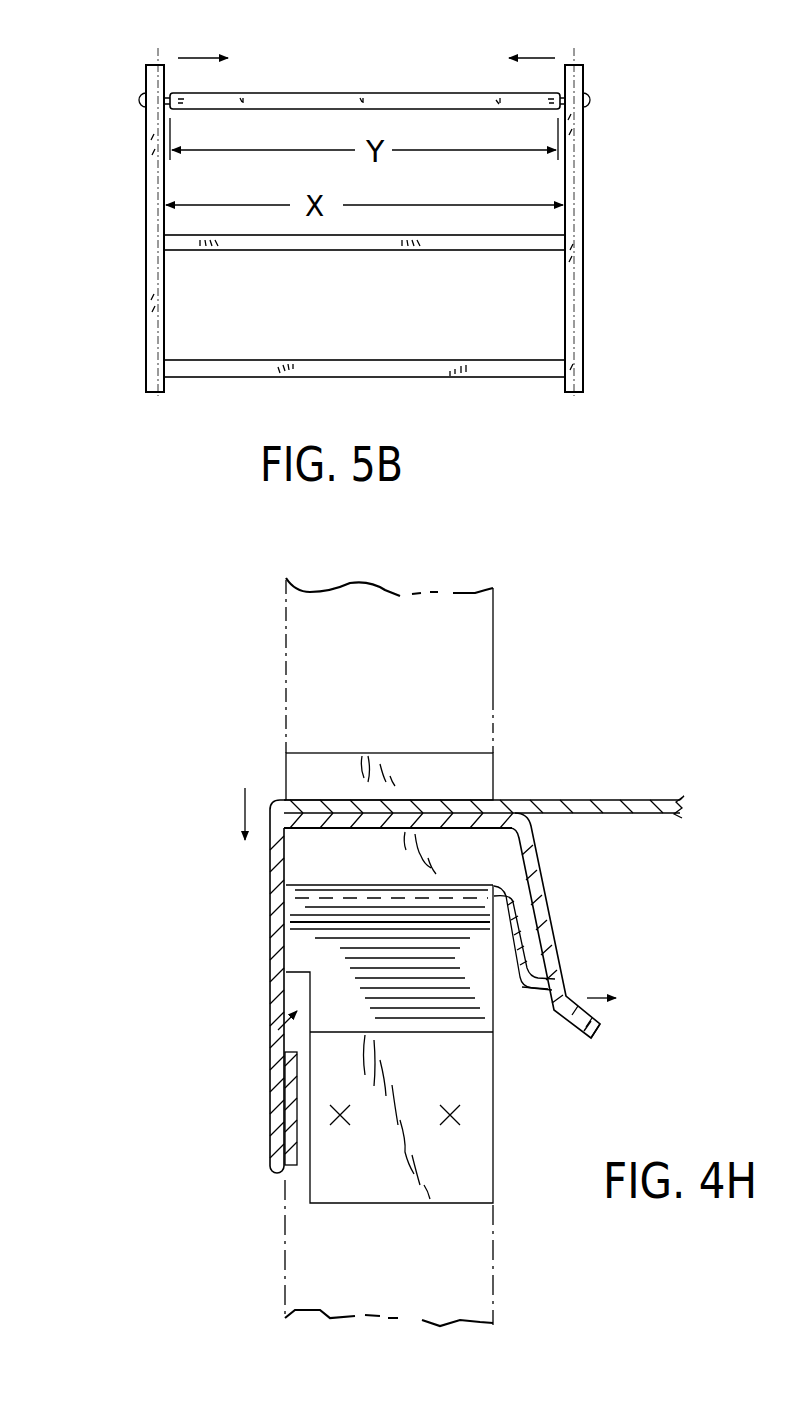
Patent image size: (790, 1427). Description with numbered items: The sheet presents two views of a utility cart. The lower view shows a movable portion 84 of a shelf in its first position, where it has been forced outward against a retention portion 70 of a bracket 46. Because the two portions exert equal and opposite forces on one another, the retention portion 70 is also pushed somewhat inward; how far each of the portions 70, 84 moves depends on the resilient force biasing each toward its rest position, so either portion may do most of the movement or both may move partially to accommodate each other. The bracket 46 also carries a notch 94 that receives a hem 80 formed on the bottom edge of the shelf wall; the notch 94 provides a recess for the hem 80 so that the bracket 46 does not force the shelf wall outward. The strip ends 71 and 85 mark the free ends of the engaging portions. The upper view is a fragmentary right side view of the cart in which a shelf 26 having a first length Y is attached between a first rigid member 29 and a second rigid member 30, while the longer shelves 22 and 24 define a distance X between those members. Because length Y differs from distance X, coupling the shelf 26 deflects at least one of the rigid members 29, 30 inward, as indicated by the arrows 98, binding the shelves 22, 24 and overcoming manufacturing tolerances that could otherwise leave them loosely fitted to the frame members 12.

In FIG. 5B, the frame member 12 is at (575, 163).
In FIG. 5B, the shelf 22 is at (484, 365).
In FIG. 5B, the shelf 24 is at (462, 250).
In FIG. 5B, the shelf 26 is at (408, 104).
In FIG. 5B, the first rigid member 29 is at (584, 73).
In FIG. 5B, the second rigid member 30 is at (152, 78).
In FIG. 5B, the arrows 98 is at (197, 52).
In FIG. 4H, the bracket 46 is at (478, 775).
In FIG. 4H, the retention portion 70 is at (512, 918).
In FIG. 4H, the strip end 71 is at (530, 992).
In FIG. 4H, the hem 80 is at (272, 1165).
In FIG. 4H, the movable portion 84 is at (535, 876).
In FIG. 4H, the clip end 85 is at (592, 1040).
In FIG. 4H, the notch 94 is at (276, 1030).